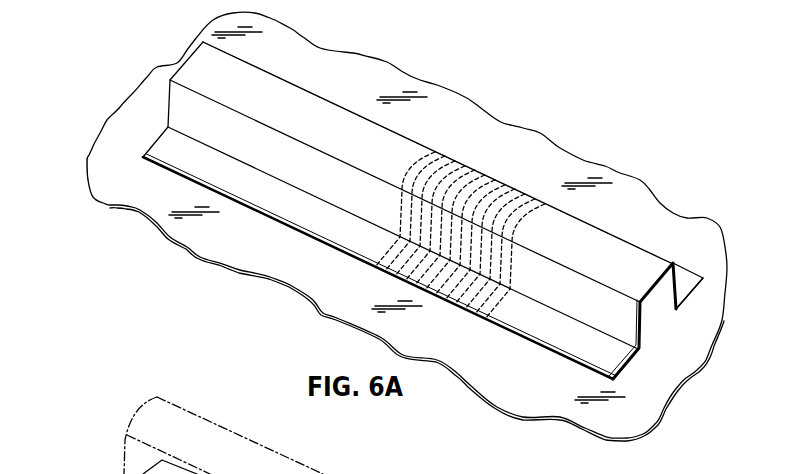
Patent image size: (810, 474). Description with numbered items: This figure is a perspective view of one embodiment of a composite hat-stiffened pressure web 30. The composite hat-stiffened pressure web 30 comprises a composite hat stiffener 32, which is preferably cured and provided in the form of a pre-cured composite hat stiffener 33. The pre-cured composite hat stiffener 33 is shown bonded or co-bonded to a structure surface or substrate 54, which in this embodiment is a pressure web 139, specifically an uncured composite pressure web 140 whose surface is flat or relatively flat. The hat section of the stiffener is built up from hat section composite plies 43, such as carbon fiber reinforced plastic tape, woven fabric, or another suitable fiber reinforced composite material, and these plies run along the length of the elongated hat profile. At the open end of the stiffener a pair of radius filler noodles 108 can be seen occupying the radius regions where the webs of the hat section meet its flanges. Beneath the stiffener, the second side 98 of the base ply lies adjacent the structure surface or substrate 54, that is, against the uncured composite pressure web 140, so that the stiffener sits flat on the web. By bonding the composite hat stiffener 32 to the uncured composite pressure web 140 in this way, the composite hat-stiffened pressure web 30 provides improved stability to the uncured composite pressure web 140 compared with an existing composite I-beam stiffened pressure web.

The composite hat-stiffened pressure web 30 is at (152, 61).
The composite hat stiffener 32 is at (284, 76).
The pre-cured composite hat stiffener 33 is at (342, 108).
The hat section composite plies 43 is at (505, 197).
The structure surface or substrate 54 is at (508, 99).
The second side 98 is at (632, 358).
The radius filler noodles 108 is at (679, 308).
The pressure web 139 is at (83, 153).
The uncured composite pressure web 140 is at (140, 203).